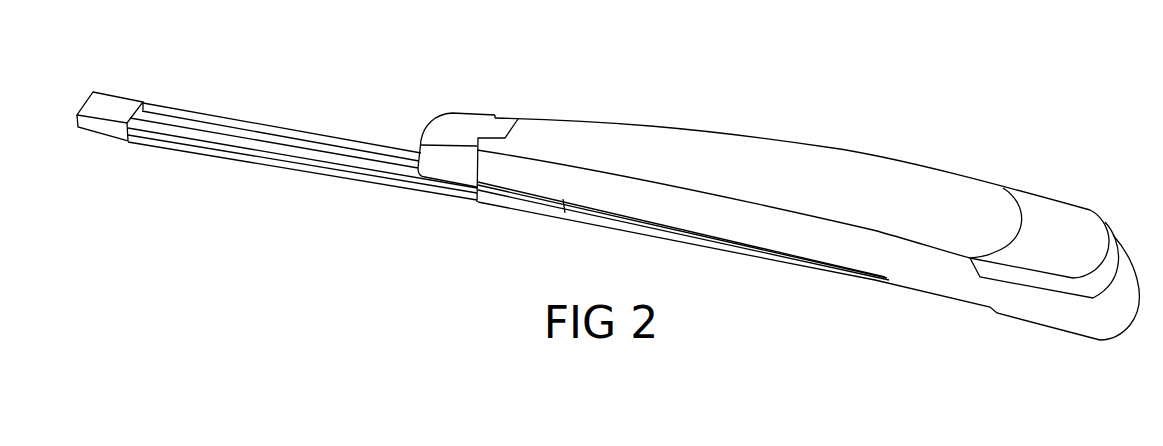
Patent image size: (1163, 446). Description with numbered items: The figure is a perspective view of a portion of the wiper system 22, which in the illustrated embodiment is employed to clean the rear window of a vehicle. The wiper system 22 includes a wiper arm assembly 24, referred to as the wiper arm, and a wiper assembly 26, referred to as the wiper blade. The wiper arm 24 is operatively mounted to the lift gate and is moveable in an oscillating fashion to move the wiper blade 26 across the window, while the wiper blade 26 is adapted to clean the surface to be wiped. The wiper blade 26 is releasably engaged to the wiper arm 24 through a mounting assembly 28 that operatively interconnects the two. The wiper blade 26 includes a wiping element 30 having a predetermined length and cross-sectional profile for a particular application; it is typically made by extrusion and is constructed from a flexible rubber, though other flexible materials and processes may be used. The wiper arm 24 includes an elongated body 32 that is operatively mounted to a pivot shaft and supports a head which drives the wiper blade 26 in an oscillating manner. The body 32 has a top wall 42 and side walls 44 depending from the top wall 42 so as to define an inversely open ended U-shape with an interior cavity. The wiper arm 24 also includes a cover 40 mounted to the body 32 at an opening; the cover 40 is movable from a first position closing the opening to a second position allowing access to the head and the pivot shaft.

The wiper system 22 is at (630, 90).
The wiper arm assembly 24 is at (833, 148).
The wiper assembly 26 is at (217, 115).
The mounting assembly 28 is at (467, 112).
The wiping element 30 is at (270, 170).
The elongated body 32 is at (690, 127).
The cover 40 is at (1088, 208).
The top wall 42 is at (910, 180).
The side walls 44 is at (885, 275).